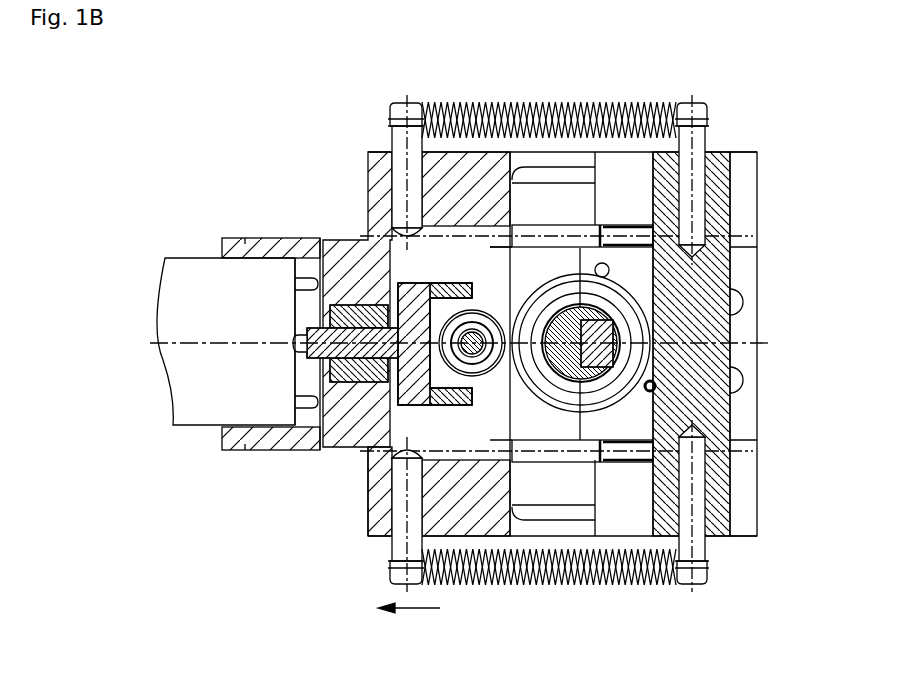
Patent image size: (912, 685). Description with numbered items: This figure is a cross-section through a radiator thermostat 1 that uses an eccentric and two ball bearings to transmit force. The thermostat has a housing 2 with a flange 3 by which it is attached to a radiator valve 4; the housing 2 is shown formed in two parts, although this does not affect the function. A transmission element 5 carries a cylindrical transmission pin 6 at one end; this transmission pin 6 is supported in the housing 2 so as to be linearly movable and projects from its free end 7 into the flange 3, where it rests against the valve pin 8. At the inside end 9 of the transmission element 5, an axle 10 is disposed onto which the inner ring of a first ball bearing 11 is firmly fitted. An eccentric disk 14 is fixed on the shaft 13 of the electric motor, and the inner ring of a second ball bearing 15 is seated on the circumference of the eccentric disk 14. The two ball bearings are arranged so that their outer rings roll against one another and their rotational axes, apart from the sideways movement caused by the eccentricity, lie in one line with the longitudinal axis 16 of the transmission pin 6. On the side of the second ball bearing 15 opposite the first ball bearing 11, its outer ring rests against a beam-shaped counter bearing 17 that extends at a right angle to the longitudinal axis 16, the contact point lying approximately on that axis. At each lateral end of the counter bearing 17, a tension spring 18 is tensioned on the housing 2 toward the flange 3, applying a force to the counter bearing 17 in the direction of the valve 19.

The radiator thermostat 1 is at (200, 160).
The housing 2 is at (345, 303).
The flange 3 is at (330, 373).
The radiator valve 4 is at (182, 393).
The transmission element 5 is at (412, 313).
The transmission pin 6 is at (350, 347).
The free end 7 is at (297, 312).
The valve pin 8 is at (297, 350).
The inside end 9 is at (483, 272).
The axle 10 is at (475, 325).
The first ball bearing 11 is at (473, 370).
The shaft 13 is at (605, 340).
The eccentric disk 14 is at (574, 363).
The second ball bearing 15 is at (587, 400).
The longitudinal axis 16 is at (757, 343).
The counter bearing 17 is at (717, 210).
The tension spring 18 is at (604, 104).
The direction of the valve 19 is at (422, 608).